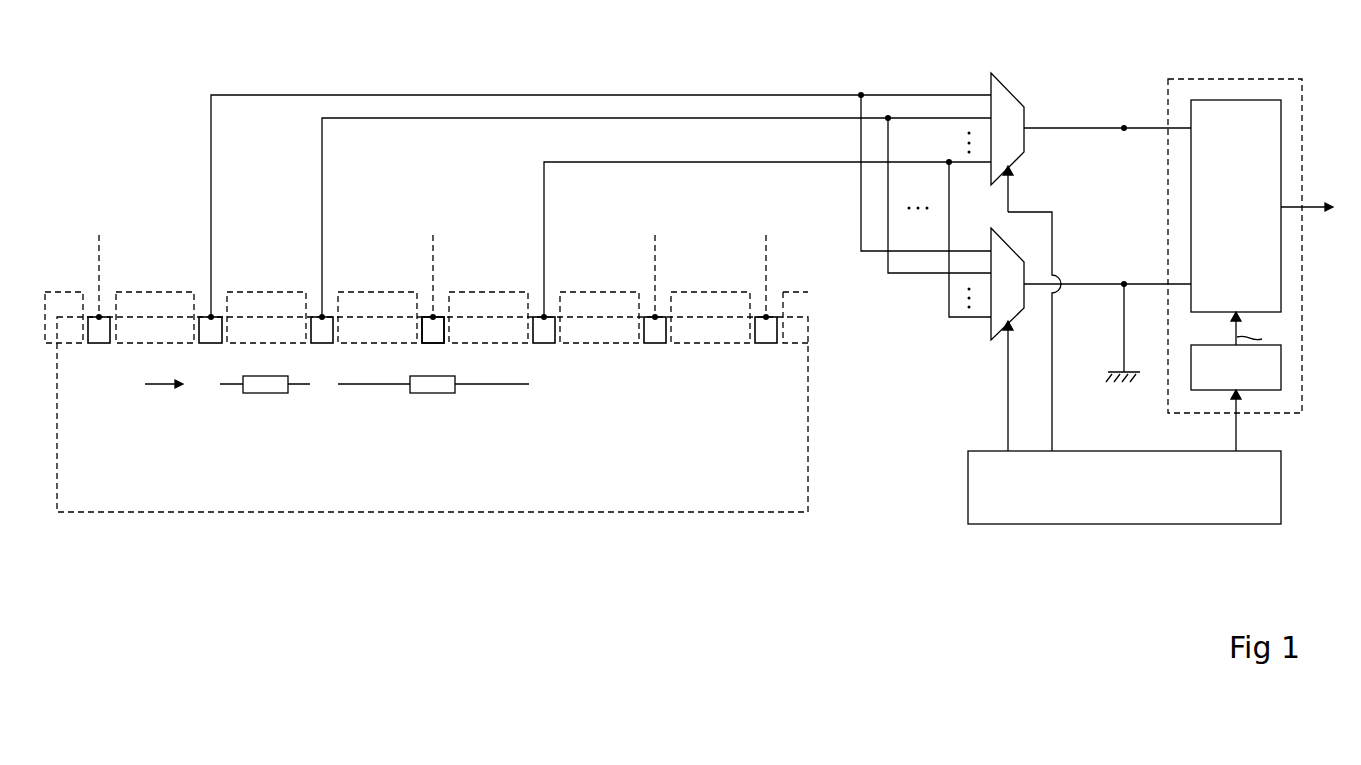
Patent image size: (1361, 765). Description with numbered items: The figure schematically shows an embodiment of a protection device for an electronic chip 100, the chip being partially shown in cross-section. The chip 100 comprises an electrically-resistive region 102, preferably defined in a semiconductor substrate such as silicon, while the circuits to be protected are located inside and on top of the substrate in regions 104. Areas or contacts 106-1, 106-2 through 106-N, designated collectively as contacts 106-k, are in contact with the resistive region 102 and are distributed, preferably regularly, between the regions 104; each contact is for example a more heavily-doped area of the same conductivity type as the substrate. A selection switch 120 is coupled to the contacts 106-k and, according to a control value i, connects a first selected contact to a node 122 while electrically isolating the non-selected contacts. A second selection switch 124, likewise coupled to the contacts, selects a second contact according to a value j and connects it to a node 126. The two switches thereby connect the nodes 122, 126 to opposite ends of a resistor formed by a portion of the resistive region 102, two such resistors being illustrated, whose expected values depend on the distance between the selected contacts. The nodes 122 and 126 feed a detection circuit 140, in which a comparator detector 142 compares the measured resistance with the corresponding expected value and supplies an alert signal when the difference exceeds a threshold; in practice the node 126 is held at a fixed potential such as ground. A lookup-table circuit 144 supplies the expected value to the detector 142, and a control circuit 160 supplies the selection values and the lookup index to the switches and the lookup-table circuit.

The electronic chip 100 is at (115, 550).
The electrically-resistive region 102 is at (473, 474).
The regions 104 is at (152, 292).
The contact 106-1 is at (208, 330).
The contact 106-2 is at (320, 330).
The contact 106-k is at (430, 330).
The contact 106-N is at (541, 330).
The selection switch 120 is at (1007, 83).
The node 122 is at (1124, 128).
The selection switch 124 is at (1013, 245).
The node 126 is at (1124, 284).
The detection circuit 140 is at (1261, 219).
The detector 142 is at (1281, 135).
The circuit 144 is at (1273, 380).
The control circuit 160 is at (1257, 490).